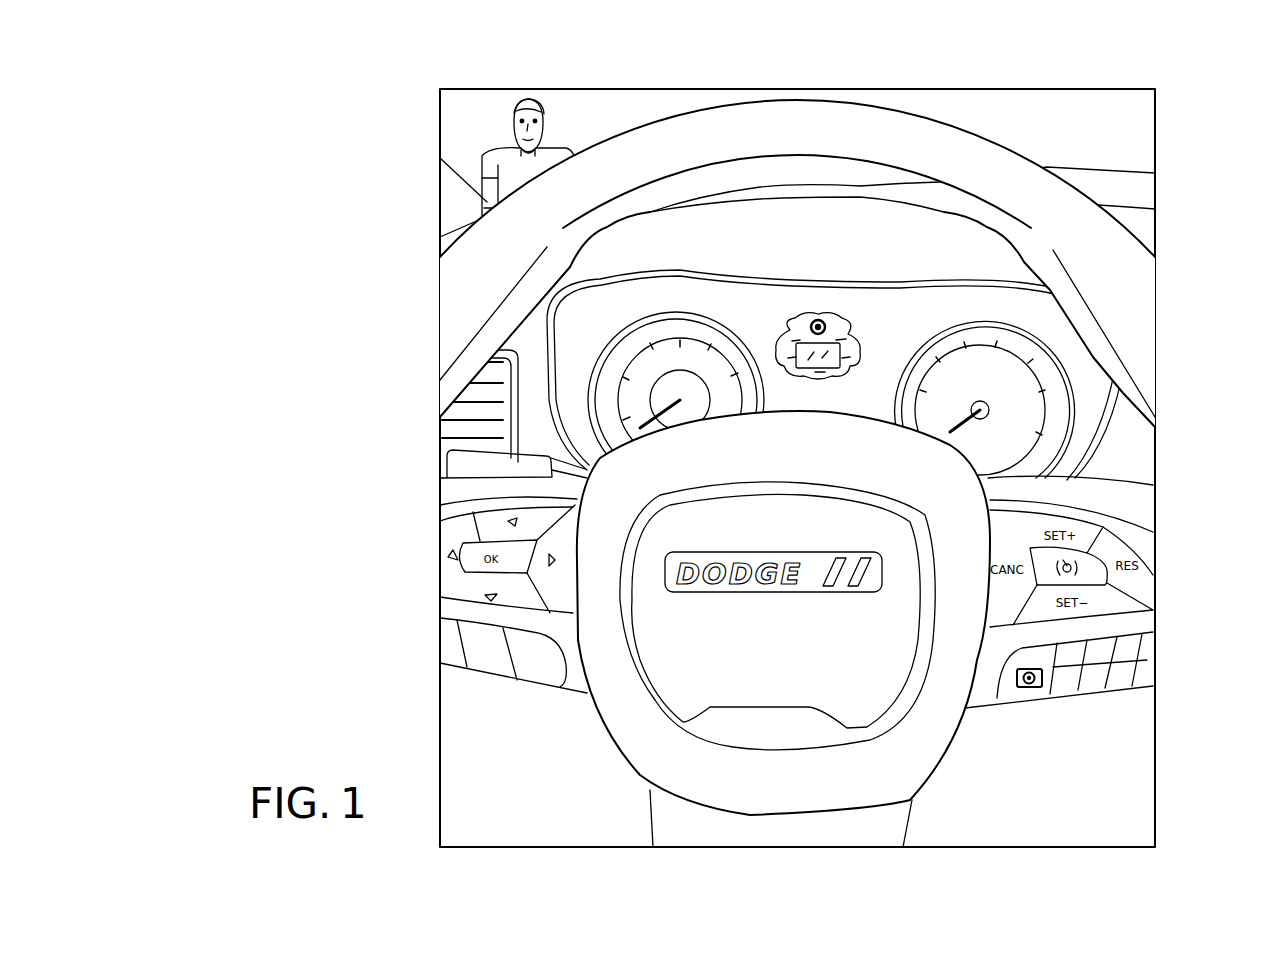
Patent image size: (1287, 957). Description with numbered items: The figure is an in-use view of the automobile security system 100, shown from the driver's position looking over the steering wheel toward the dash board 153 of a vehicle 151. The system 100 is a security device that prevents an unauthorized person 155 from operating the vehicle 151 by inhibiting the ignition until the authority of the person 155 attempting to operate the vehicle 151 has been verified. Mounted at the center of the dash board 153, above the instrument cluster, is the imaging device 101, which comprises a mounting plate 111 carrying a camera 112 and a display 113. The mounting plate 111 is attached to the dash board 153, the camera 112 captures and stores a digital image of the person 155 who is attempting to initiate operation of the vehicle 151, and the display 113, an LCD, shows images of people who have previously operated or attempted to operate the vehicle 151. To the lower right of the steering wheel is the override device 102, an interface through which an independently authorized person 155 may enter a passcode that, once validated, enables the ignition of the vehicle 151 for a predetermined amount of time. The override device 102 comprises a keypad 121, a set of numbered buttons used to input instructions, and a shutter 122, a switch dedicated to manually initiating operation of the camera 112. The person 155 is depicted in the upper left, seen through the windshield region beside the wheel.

The automobile security system 100 is at (303, 133).
The person 155 is at (547, 147).
The dash board 153 is at (960, 303).
The imaging device 101 is at (885, 318).
The mounting plate 111 is at (783, 344).
The camera 112 is at (820, 320).
The display 113 is at (813, 367).
The keypad 121 is at (1140, 654).
The override device 102 is at (1114, 687).
The shutter 122 is at (1028, 687).
The vehicle 151 is at (1103, 773).